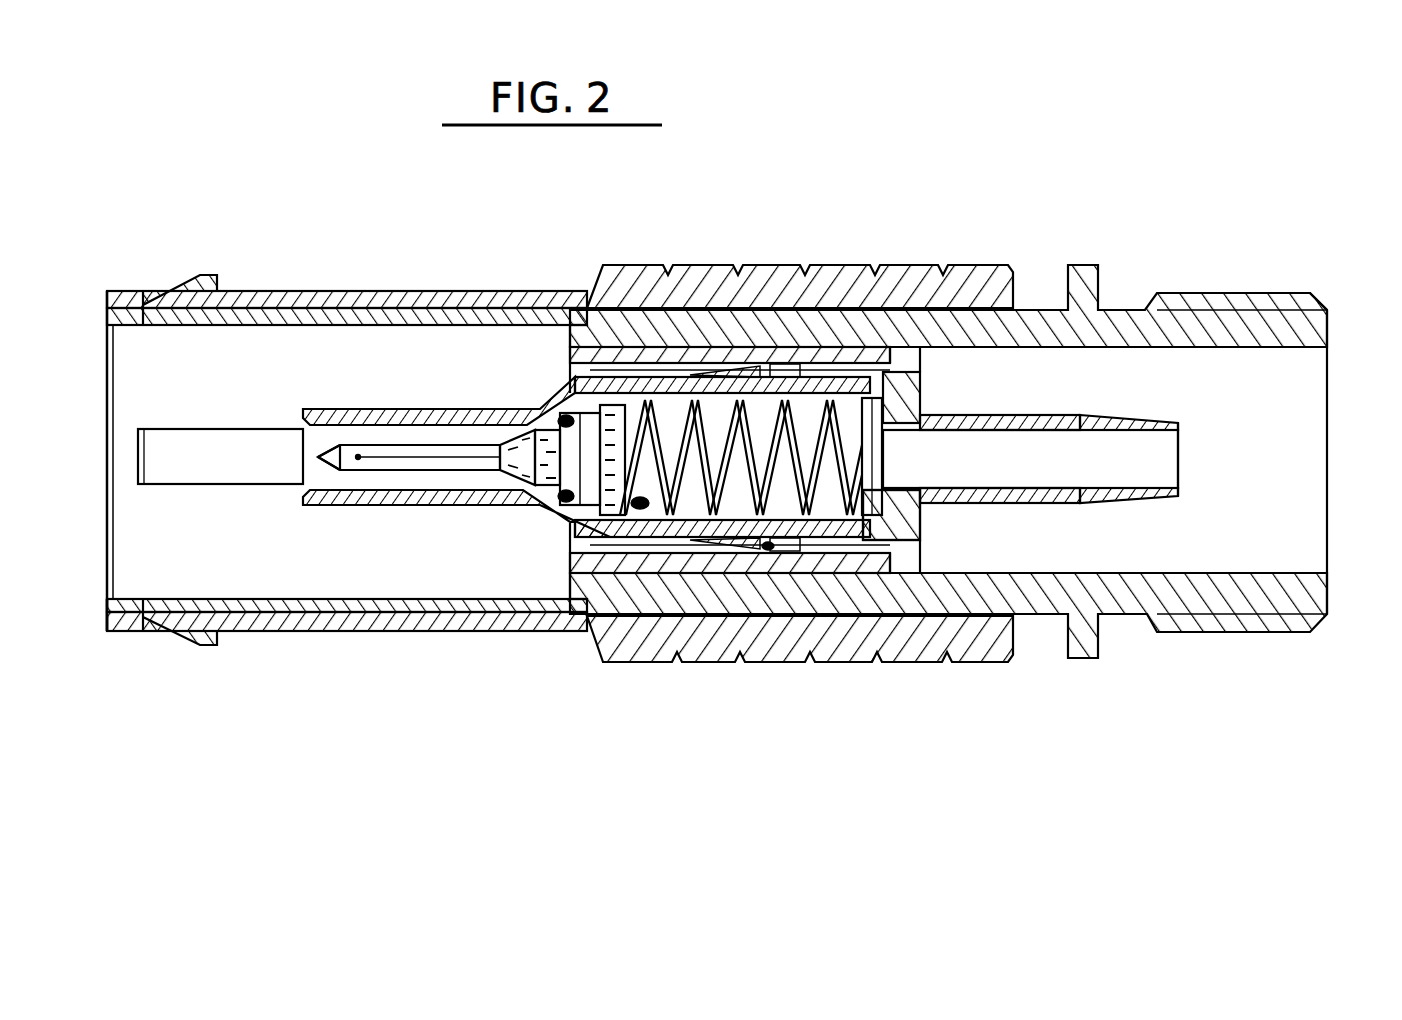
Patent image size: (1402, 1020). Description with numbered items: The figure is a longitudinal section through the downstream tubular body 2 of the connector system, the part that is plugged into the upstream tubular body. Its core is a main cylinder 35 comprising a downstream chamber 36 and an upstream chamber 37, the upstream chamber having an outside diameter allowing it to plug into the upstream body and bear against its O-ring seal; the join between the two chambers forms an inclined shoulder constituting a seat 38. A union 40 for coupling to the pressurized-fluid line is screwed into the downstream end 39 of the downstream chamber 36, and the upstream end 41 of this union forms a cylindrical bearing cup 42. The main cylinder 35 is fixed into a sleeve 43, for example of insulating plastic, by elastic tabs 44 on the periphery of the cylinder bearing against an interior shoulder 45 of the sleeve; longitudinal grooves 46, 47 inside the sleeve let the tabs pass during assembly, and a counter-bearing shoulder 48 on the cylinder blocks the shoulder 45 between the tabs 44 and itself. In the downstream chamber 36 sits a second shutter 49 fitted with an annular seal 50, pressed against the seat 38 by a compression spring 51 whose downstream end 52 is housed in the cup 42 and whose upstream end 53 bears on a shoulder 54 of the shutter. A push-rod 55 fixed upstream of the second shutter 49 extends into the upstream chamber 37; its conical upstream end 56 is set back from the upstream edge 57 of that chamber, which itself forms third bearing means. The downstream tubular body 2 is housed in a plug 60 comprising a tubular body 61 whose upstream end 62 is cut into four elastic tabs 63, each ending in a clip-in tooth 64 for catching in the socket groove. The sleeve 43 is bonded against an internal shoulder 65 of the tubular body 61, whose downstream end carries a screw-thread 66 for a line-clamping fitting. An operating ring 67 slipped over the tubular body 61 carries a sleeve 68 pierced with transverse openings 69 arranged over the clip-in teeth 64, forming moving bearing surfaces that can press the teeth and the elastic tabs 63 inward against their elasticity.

The downstream tubular body 2 is at (1112, 308).
The main cylinder 35 is at (622, 530).
The downstream chamber 36 is at (668, 402).
The upstream chamber 37 is at (424, 478).
The seat 38 is at (562, 524).
The downstream end 39 is at (870, 515).
The union 40 is at (1135, 414).
The upstream end 41 is at (900, 530).
The cylindrical bearing cup 42 is at (812, 542).
The sleeve 43 is at (677, 562).
The elastic tabs 44 is at (702, 547).
The interior shoulder 45 is at (737, 547).
The longitudinal groove 46 is at (570, 548).
The longitudinal groove 47 is at (885, 562).
The counter-bearing shoulder 48 is at (768, 550).
The second shutter 49 is at (555, 398).
The annular seal 50 is at (568, 418).
The compression spring 51 is at (832, 366).
The downstream end 52 is at (865, 366).
The upstream end 53 is at (598, 395).
The shoulder 54 is at (607, 600).
The push-rod 55 is at (358, 460).
The conical upstream end 56 is at (340, 470).
The upstream edge 57 is at (318, 462).
The plug 60 is at (1032, 298).
The tubular body 61 is at (1125, 598).
The upstream end 62 is at (106, 630).
The elastic tabs 63 is at (236, 430).
The clip-in tooth 64 is at (208, 275).
The internal shoulder 65 is at (925, 586).
The screw-thread 66 is at (1300, 294).
The operating ring 67 is at (800, 264).
The sleeve 68 is at (374, 292).
The transverse openings 69 is at (152, 290).